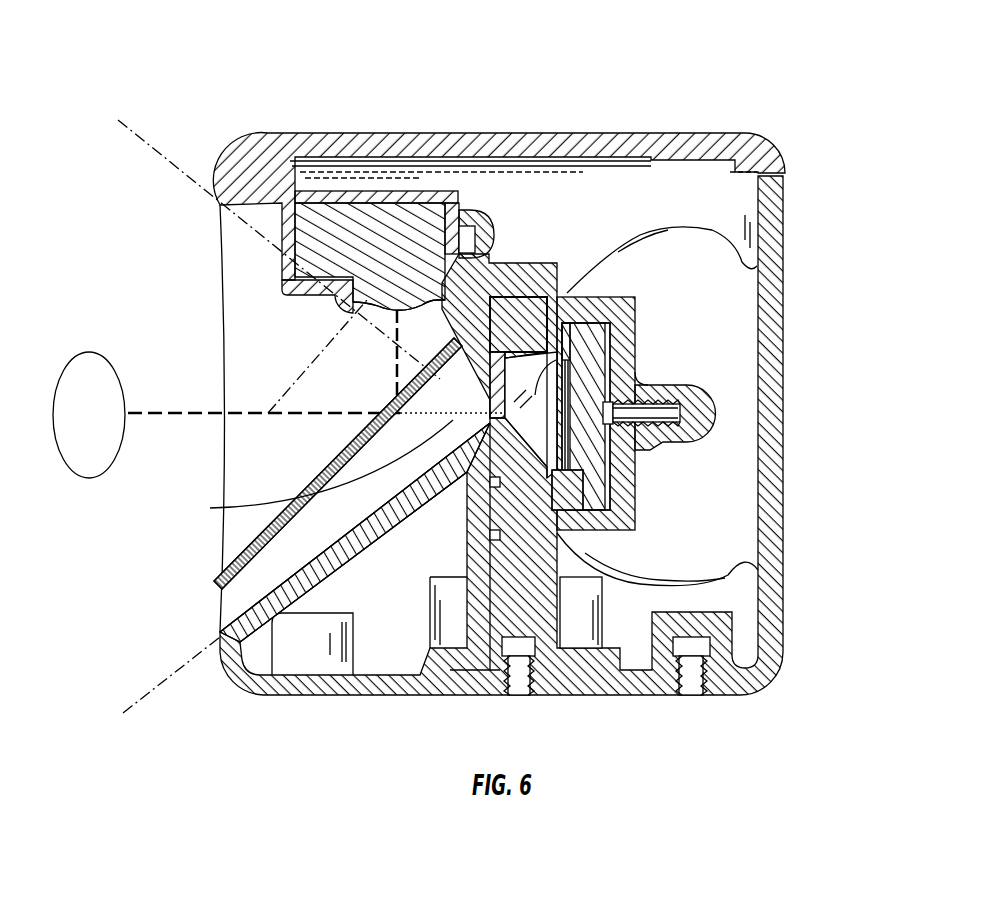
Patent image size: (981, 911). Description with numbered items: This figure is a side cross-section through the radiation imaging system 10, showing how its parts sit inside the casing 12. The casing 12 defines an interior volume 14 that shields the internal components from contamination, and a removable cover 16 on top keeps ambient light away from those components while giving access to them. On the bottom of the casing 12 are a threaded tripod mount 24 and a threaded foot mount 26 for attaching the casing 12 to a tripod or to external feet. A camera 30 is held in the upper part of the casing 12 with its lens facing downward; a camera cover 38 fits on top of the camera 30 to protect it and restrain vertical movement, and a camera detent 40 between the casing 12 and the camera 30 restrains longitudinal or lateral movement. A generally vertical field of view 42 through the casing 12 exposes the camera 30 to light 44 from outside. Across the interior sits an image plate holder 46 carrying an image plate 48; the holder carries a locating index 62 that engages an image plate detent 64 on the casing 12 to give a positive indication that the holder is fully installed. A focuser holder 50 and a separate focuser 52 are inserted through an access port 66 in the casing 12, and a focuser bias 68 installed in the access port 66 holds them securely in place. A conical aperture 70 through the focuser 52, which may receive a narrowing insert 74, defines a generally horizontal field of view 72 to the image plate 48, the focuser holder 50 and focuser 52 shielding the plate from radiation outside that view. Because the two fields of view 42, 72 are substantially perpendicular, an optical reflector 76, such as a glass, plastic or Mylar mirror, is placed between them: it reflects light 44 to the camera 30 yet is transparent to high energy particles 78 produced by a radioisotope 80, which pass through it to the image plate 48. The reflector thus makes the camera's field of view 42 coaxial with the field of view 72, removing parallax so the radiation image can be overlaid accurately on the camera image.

The radiation imaging system 10 is at (205, 100).
The casing 12 is at (786, 583).
The interior volume 14 is at (722, 302).
The removable cover 16 is at (727, 130).
The tripod mount 24 is at (532, 697).
The foot mount 26 is at (706, 696).
The camera 30 is at (324, 213).
The camera cover 38 is at (408, 130).
The camera detent 40 is at (477, 225).
The field of view 42 is at (310, 363).
The light 44 is at (405, 355).
The image plate holder 46 is at (635, 525).
The image plate 48 is at (610, 510).
The focuser holder 50 is at (495, 373).
The focuser 52 is at (505, 407).
The locating index 62 is at (600, 460).
The image plate detent 64 is at (640, 454).
The access port 66 is at (589, 680).
The focuser bias 68 is at (476, 695).
The conical aperture 70 is at (640, 384).
The field of view 72 is at (143, 697).
The insert 74 is at (572, 295).
The optical reflector 76 is at (247, 542).
The high energy particles 78 is at (290, 507).
The radioisotope 80 is at (87, 348).